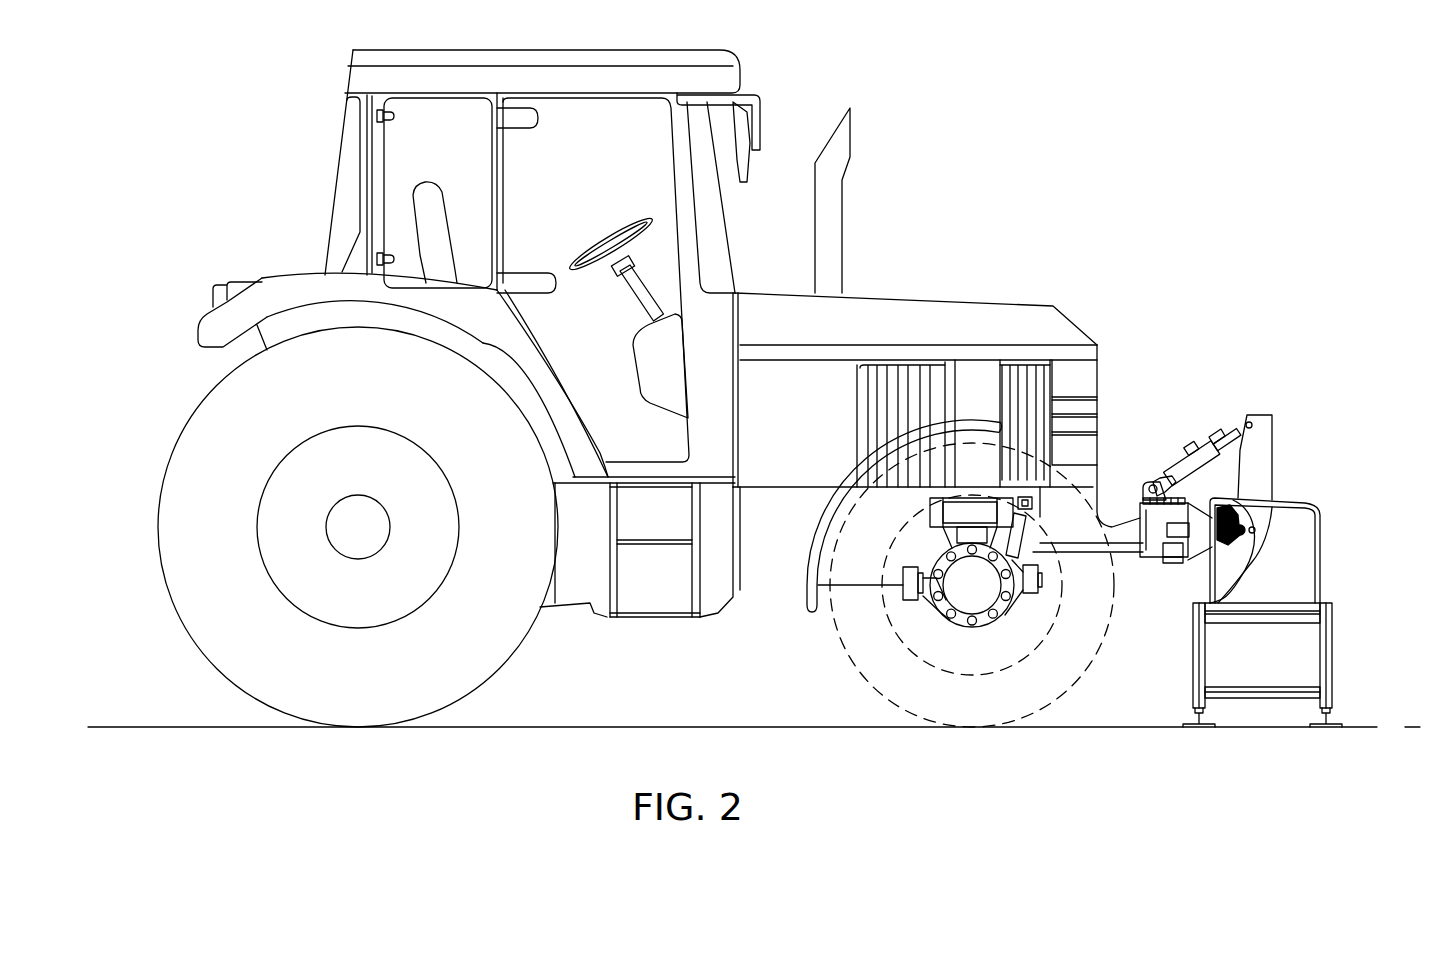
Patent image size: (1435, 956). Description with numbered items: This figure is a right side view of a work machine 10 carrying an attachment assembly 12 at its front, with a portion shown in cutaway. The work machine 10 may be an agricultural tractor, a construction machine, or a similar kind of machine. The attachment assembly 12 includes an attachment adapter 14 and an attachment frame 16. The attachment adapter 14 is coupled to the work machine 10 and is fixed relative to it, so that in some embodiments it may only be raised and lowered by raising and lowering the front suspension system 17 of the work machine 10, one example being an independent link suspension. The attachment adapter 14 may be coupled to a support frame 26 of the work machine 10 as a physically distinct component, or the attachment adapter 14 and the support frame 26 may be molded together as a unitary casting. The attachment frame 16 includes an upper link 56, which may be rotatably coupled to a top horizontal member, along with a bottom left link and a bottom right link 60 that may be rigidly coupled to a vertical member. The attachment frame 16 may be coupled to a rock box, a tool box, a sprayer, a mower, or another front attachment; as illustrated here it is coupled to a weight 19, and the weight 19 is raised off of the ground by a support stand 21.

The work machine 10 is at (1007, 210).
The attachment assembly 12 is at (1184, 474).
The attachment adapter 14 is at (1137, 510).
The attachment frame 16 is at (1180, 570).
The front suspension system 17 is at (907, 603).
The weight 19 is at (1260, 546).
The support stand 21 is at (1350, 635).
The support frame 26 is at (1135, 560).
The upper link 56 is at (1216, 415).
The bottom right link 60 is at (1257, 537).